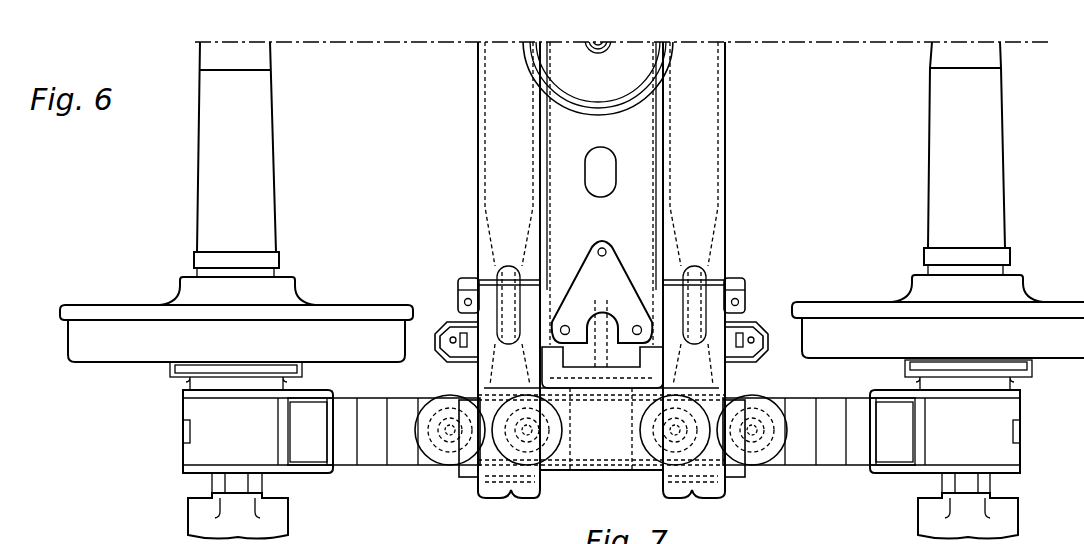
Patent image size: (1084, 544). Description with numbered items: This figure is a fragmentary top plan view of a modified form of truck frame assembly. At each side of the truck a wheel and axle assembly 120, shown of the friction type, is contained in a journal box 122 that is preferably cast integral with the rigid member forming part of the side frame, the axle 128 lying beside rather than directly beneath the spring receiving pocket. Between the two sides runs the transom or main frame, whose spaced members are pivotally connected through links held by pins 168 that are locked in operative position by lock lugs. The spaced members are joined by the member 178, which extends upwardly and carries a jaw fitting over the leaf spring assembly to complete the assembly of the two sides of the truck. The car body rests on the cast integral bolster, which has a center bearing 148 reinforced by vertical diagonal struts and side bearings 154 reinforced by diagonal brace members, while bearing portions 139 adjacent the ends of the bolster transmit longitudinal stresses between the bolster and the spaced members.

The wheel and axle assembly 120 is at (990, 166).
The journal box 122 is at (1005, 508).
The axle 128 is at (1001, 100).
The bearing portion 139 is at (730, 311).
The center bearing 148 is at (670, 54).
The side bearing 154 is at (608, 256).
The pin 168 is at (717, 282).
The joining member 178 is at (587, 453).